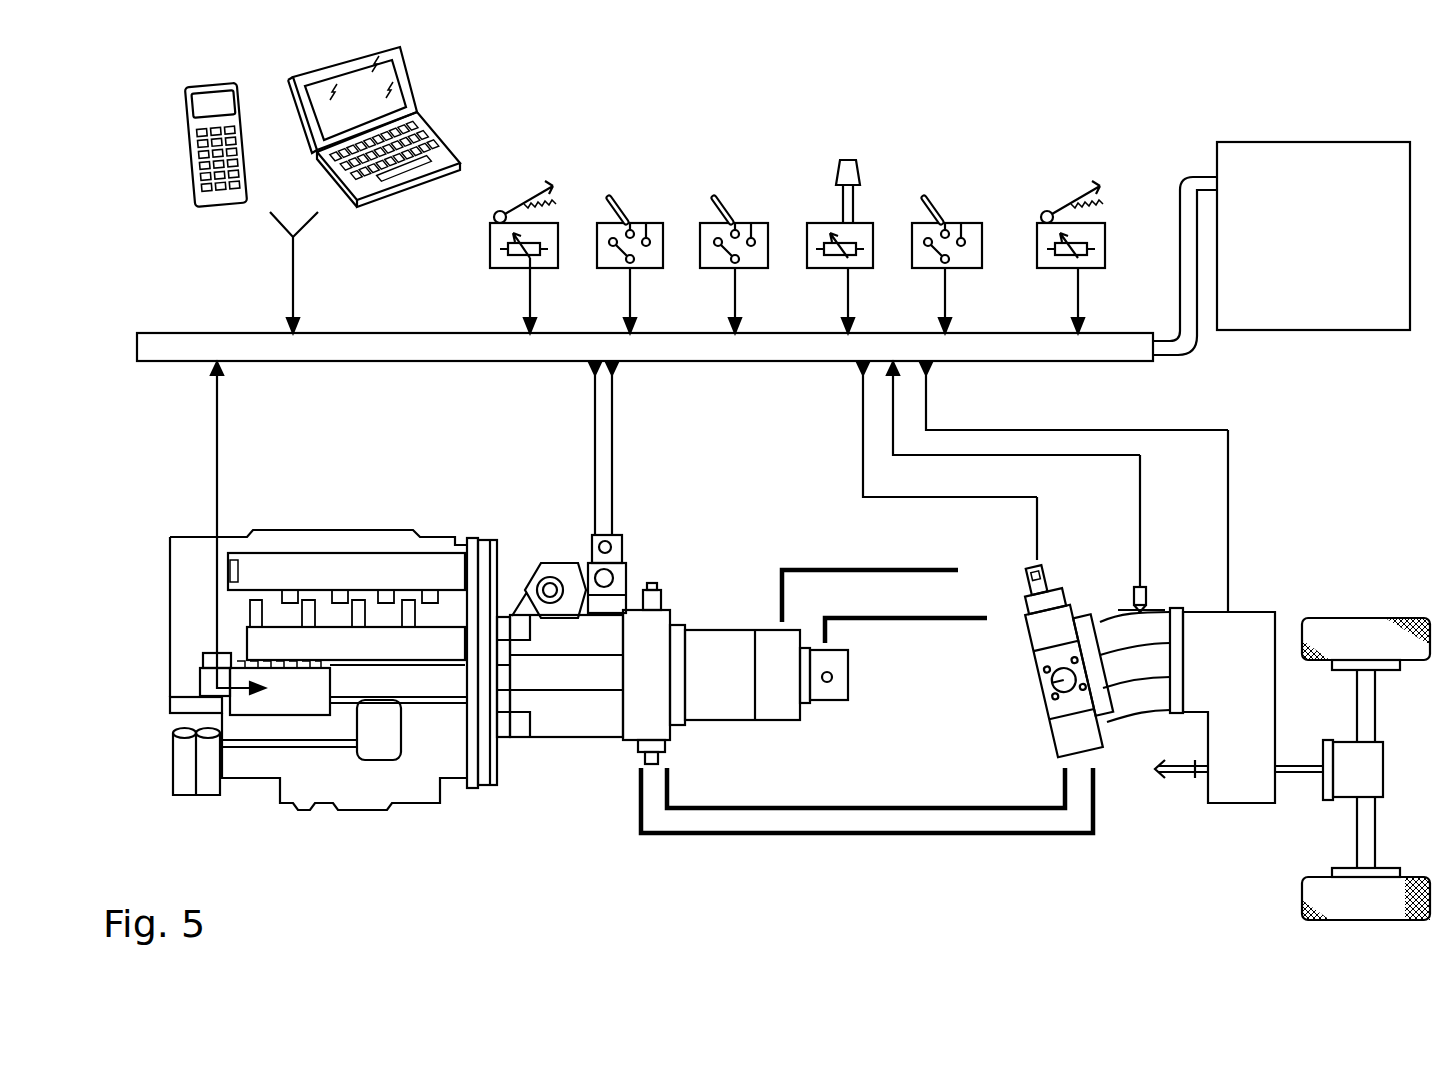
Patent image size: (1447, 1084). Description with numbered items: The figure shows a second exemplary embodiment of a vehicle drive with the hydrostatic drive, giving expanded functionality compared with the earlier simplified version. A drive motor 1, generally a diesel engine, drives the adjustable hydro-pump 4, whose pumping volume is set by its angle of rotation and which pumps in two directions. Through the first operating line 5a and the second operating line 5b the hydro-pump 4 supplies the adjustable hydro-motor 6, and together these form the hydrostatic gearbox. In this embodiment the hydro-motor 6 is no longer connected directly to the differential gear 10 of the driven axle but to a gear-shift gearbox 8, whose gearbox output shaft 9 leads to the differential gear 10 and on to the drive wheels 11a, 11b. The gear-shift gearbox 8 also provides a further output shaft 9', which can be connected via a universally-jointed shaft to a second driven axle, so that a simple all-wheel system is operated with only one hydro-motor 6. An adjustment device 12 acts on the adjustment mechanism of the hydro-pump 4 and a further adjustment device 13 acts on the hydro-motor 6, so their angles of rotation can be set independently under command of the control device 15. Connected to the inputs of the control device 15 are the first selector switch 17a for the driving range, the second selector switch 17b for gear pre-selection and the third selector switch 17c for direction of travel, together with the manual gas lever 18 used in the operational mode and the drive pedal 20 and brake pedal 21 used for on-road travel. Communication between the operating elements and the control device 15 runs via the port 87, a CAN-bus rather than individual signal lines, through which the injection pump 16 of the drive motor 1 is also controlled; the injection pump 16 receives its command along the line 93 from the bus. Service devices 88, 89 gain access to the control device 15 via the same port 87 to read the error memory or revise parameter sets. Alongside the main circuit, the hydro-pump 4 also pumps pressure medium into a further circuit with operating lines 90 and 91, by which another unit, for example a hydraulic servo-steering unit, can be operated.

The drive motor 1 is at (365, 790).
The hydro-pump 4 is at (570, 735).
The first operating line 5a is at (840, 805).
The second operating line 5b is at (730, 836).
The hydro-motor 6 is at (1055, 680).
The gear-shift gearbox 8 is at (1243, 800).
The gearbox output shaft 9 is at (1299, 806).
The further output shaft 9' is at (1181, 803).
The differential gear 10 is at (1370, 765).
The drive wheel 11a is at (1355, 632).
The drive wheel 11b is at (1310, 887).
The adjustment device 12 is at (614, 578).
The further adjustment device 13 is at (1052, 575).
The control device 15 is at (1332, 255).
The injection pump 16 is at (287, 693).
The first selector switch 17a is at (655, 222).
The second selector switch 17b is at (770, 222).
The third selector switch 17c is at (975, 222).
The manual gas lever 18 is at (862, 222).
The drive pedal 20 is at (550, 222).
The brake pedal 21 is at (1105, 222).
The port 87 is at (172, 347).
The service device 88 is at (212, 193).
The service device 89 is at (413, 178).
The further operating line 90 is at (818, 568).
The further operating line 91 is at (885, 623).
The signal line 93 is at (214, 478).